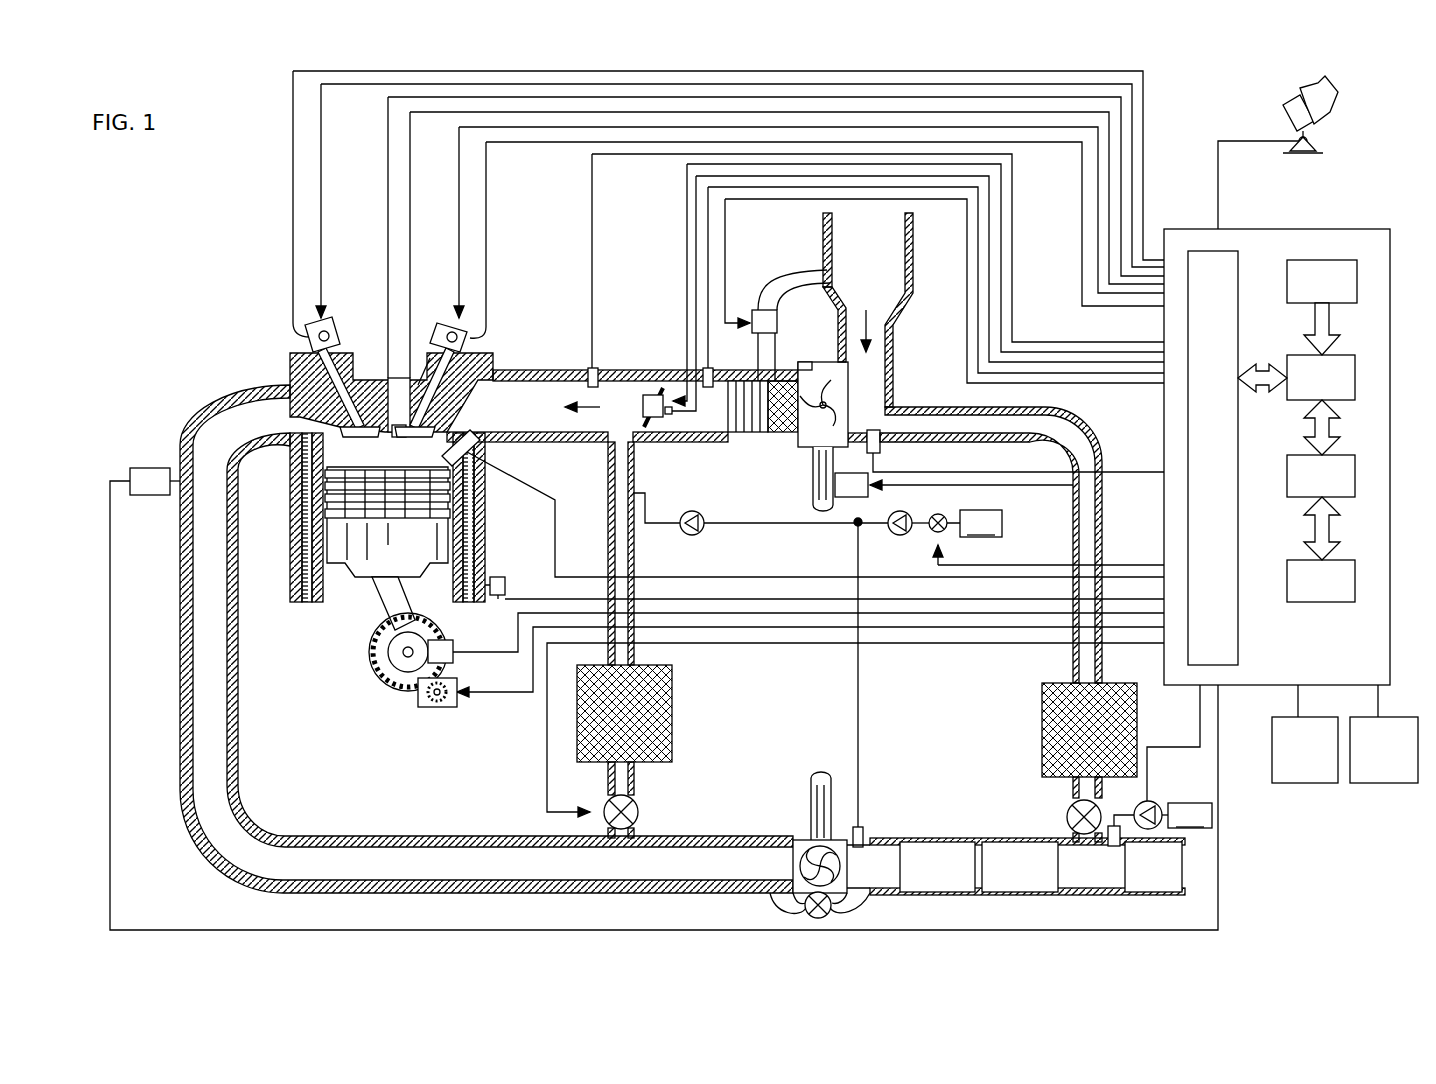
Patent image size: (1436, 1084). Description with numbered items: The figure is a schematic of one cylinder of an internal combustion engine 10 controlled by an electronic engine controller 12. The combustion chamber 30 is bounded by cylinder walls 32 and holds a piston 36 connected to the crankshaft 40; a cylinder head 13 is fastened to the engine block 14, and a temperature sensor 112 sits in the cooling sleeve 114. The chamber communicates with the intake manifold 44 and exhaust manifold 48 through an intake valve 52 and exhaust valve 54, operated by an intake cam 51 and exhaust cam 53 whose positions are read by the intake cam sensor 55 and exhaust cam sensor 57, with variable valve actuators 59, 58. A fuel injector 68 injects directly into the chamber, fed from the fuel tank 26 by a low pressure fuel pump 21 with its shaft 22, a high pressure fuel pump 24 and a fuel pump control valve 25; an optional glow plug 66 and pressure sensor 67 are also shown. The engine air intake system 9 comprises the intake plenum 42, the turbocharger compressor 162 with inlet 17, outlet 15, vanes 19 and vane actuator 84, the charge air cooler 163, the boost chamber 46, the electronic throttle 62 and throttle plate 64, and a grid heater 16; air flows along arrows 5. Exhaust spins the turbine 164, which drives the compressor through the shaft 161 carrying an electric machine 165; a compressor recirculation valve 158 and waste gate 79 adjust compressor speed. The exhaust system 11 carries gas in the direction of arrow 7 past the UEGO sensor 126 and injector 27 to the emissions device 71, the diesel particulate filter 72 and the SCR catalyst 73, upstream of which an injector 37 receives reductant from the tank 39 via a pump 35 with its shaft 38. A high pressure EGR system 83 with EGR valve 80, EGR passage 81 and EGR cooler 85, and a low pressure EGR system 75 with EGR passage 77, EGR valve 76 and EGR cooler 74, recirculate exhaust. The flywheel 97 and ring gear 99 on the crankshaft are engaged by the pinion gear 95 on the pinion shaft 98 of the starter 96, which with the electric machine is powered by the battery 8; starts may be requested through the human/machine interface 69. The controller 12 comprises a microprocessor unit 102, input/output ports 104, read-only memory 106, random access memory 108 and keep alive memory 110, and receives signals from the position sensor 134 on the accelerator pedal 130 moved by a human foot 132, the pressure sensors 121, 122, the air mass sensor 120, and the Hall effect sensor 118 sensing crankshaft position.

The arrows 5 is at (616, 400).
The arrow 7 is at (400, 862).
The battery 8 is at (1384, 750).
The engine air intake system 9 is at (662, 290).
The internal combustion engine 10 is at (215, 298).
The exhaust system 11 is at (165, 432).
The electronic engine controller 12 is at (1300, 440).
The cylinder head 13 is at (476, 386).
The engine block 14 is at (363, 517).
The outlet 15 is at (776, 352).
The grid heater 16 is at (742, 434).
The inlet 17 is at (865, 380).
The compressor vanes 19 is at (835, 410).
The low pressure fuel pump 21 is at (908, 513).
The shaft 22 is at (903, 536).
The high pressure fuel pump 24 is at (681, 530).
The fuel pump control valve 25 is at (943, 515).
The fuel tank 26 is at (981, 523).
The injector 27 is at (863, 832).
The combustion chamber 30 is at (292, 566).
The cylinder walls 32 is at (333, 590).
The pump 35 is at (1158, 802).
The piston 36 is at (375, 590).
The injector 37 is at (1112, 826).
The shaft 38 is at (1124, 810).
The tank 39 is at (1190, 815).
The crankshaft 40 is at (384, 671).
The intake plenum 42 is at (852, 288).
The intake manifold 44 is at (521, 419).
The intake boost chamber 46 is at (698, 420).
The exhaust manifold 48 is at (242, 424).
The intake cam 51 is at (459, 318).
The intake valve 52 is at (430, 423).
The exhaust cam 53 is at (322, 318).
The exhaust valve 54 is at (318, 395).
The intake cam sensor 55 is at (468, 340).
The exhaust cam sensor 57 is at (310, 337).
The variable valve activating/deactivating actuator 58 is at (334, 332).
The variable valve activating/deactivating actuator 59 is at (445, 328).
The electronic throttle 62 is at (655, 382).
The throttle plate 64 is at (660, 393).
The glow plug 66 is at (385, 392).
The pressure sensor 67 is at (428, 390).
The fuel injector 68 is at (476, 463).
The human/machine interface 69 is at (1305, 750).
The emissions device 71 is at (937, 867).
The diesel particulate filter 72 is at (1020, 867).
The selective catalytic reduction catalyst 73 is at (1153, 867).
The EGR cooler 74 is at (1138, 720).
The low pressure EGR system 75 is at (998, 762).
The EGR valve 76 is at (1068, 808).
The EGR passage 77 is at (1090, 510).
The waste gate 79 is at (832, 908).
The EGR valve 80 is at (603, 803).
The EGR passage 81 is at (608, 470).
The high pressure EGR system 83 is at (525, 782).
The compressor vane actuator 84 is at (802, 362).
The EGR cooler 85 is at (674, 700).
The pinion gear 95 is at (441, 708).
The starter 96 is at (434, 716).
The flywheel 97 is at (384, 648).
The pinion shaft 98 is at (428, 707).
The ring gear 99 is at (402, 688).
The microprocessor unit 102 is at (1355, 372).
The input/output ports 104 is at (1243, 258).
The read-only memory 106 is at (1357, 283).
The random access memory 108 is at (1355, 472).
The keep alive memory 110 is at (1355, 575).
The temperature sensor 112 is at (500, 585).
The cooling sleeve 114 is at (305, 514).
The Hall effect sensor 118 is at (455, 650).
The sensor 120 is at (880, 446).
The pressure sensor 121 is at (588, 372).
The pressure sensor 122 is at (712, 370).
The UEGO sensor 126 is at (130, 474).
The accelerator pedal 130 is at (1324, 119).
The human foot 132 is at (1332, 100).
The position sensor 134 is at (1318, 145).
The compressor recirculation valve 158 is at (752, 310).
The shaft 161 is at (811, 511).
The turbocharger compressor 162 is at (797, 450).
The charge air cooler 163 is at (782, 434).
The turbine 164 is at (798, 838).
The electric machine 165 is at (853, 497).